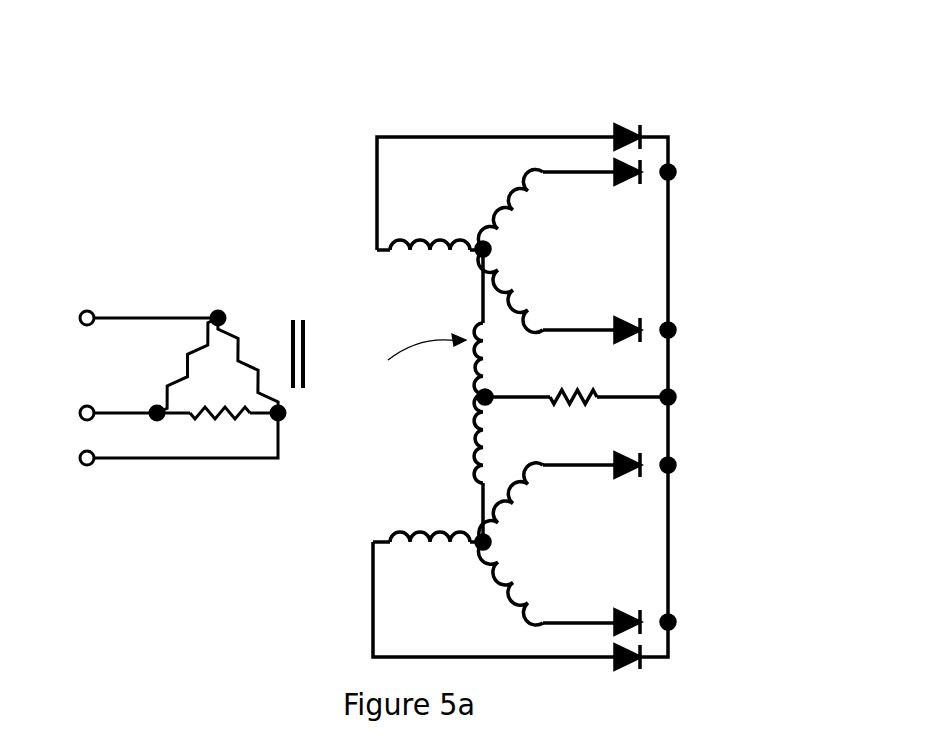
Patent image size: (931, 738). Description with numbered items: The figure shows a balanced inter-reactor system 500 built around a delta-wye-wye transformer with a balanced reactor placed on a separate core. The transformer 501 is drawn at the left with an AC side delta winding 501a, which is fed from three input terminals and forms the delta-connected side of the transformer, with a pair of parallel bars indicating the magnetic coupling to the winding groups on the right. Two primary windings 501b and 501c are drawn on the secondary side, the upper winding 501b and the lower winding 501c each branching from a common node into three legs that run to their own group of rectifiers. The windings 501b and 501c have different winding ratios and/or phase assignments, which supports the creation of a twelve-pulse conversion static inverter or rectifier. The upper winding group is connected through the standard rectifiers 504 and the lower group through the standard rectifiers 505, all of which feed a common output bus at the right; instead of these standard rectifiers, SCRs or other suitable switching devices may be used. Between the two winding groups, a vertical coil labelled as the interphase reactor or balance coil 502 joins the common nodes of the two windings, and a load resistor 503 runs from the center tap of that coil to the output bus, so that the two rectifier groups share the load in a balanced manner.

The balanced inter-reactor system 500 is at (702, 97).
The transformer 501 is at (303, 324).
The AC side delta winding 501a is at (163, 318).
The primary winding 501b is at (518, 280).
The primary winding 501c is at (490, 541).
The interphase reactor (balance coil) 502 is at (490, 317).
The load resistor RL 503 is at (598, 403).
The rectifiers 504 is at (680, 120).
The rectifiers 505 is at (672, 435).